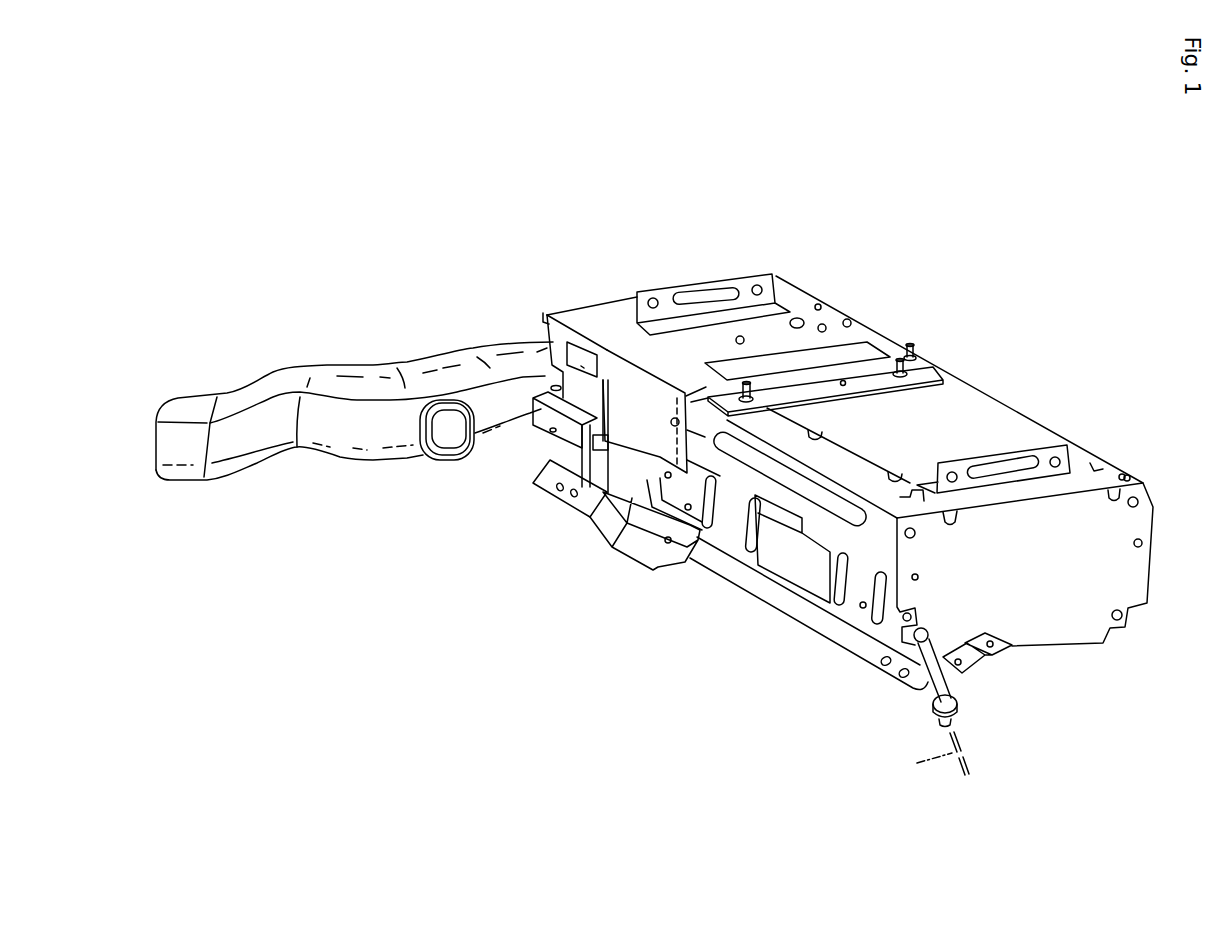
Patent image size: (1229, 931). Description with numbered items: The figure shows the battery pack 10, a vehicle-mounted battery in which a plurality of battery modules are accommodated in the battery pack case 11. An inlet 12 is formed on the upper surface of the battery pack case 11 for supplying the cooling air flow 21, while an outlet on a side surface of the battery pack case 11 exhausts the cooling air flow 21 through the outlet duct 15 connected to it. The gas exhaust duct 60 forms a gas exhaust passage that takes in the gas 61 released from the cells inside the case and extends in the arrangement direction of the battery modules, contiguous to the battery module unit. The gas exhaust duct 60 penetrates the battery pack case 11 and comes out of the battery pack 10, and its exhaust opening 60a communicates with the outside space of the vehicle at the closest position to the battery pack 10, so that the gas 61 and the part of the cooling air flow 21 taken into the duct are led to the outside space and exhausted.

The battery pack 10 is at (392, 222).
The battery pack case 11 is at (792, 300).
The inlet 12 is at (882, 360).
The outlet duct 15 is at (188, 455).
The cooling air flow 21 is at (920, 762).
The gas exhaust duct 60 is at (930, 690).
The exhaust opening 60a is at (962, 726).
The gas 61 is at (965, 748).